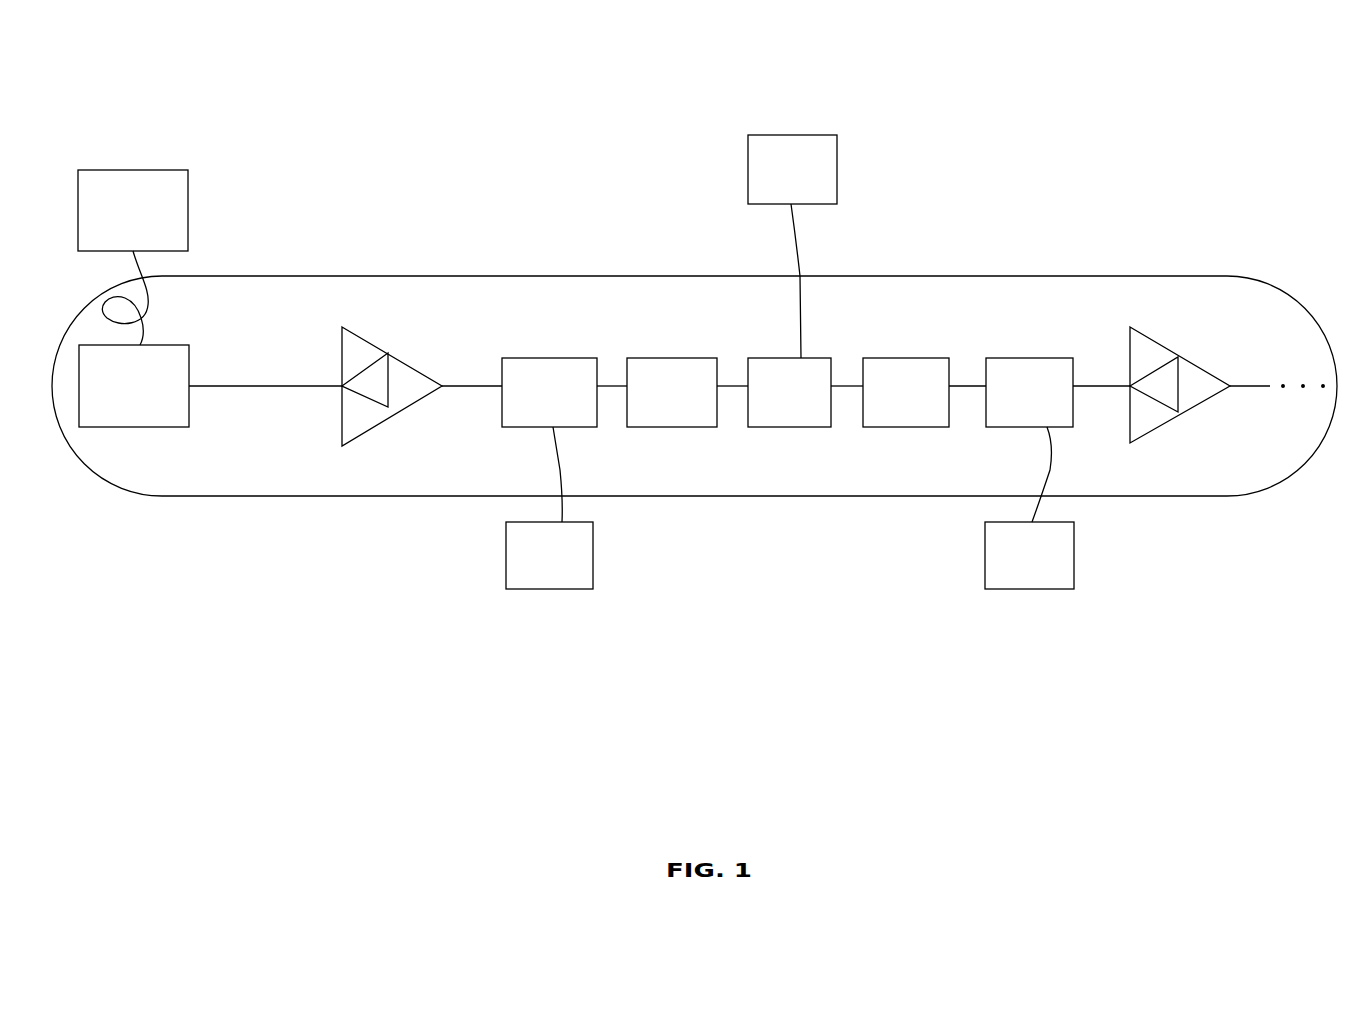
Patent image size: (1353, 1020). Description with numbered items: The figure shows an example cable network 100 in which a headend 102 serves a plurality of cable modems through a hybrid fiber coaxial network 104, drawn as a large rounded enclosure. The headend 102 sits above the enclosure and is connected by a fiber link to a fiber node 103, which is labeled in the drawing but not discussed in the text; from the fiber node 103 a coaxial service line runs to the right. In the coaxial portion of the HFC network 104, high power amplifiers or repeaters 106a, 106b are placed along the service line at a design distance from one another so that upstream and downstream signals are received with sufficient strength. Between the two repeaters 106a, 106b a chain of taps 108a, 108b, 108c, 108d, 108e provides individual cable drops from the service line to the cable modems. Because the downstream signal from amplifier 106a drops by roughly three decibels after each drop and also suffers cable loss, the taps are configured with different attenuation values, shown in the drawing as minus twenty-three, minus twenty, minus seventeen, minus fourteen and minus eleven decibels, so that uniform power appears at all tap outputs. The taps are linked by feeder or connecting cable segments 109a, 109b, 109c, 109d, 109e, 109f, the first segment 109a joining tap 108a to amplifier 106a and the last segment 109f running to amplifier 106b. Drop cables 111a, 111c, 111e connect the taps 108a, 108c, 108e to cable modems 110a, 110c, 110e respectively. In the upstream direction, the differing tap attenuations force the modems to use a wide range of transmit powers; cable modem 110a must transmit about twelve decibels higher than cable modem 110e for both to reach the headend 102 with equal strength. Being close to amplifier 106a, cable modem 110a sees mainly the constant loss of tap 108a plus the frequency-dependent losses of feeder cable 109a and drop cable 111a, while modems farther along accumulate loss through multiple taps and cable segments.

The cable network 100 is at (1302, 75).
The headend 102 is at (170, 182).
The fiber node 103 is at (163, 345).
The hybrid fiber coaxial network 104 is at (486, 276).
The amplifier 106a is at (388, 355).
The amplifier 106b is at (1168, 350).
The tap 108a is at (555, 358).
The tap 108b is at (680, 358).
The tap 108c is at (779, 427).
The tap 108d is at (913, 358).
The tap 108e is at (1032, 358).
The feeder cable 109a is at (475, 382).
The connecting cable 109b is at (615, 383).
The connecting cable 109c is at (730, 383).
The connecting cable 109d is at (843, 383).
The connecting cable 109e is at (966, 383).
The connecting cable 109f is at (1097, 383).
The cable modem 110a is at (519, 589).
The cable modem 110c is at (795, 135).
The cable modem 110e is at (1026, 589).
The drop cable 111a is at (558, 445).
The drop cable 111c is at (797, 230).
The drop cable 111e is at (1052, 447).